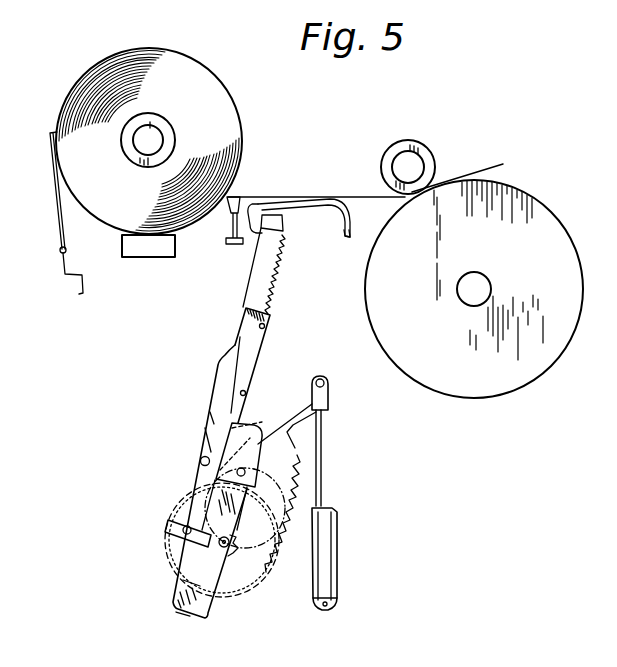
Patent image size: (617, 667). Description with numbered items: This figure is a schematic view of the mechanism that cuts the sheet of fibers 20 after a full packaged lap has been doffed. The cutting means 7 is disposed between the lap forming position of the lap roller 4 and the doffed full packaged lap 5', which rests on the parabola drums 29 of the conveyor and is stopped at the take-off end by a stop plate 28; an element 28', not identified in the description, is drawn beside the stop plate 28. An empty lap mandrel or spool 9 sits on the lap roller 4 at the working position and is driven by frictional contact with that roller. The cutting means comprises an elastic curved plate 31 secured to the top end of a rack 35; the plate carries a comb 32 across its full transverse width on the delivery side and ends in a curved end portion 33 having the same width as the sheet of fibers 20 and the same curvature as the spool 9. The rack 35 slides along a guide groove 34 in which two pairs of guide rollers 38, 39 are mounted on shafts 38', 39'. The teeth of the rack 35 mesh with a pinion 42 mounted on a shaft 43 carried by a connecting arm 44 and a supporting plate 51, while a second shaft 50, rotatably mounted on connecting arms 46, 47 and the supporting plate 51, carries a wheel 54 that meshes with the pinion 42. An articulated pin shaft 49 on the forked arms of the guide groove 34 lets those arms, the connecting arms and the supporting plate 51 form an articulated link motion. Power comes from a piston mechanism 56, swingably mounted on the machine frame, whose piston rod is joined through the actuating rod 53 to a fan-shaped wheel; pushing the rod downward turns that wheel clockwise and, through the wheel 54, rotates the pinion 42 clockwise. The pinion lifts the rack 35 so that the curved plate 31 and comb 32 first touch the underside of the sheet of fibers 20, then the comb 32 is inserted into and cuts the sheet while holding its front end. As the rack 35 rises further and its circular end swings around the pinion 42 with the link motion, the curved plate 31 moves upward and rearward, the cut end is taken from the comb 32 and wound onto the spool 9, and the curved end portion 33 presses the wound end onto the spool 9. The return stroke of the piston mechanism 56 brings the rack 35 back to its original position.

The lap roller 4 is at (485, 386).
The full packaged lap 5' is at (165, 141).
The means for cutting the sheet of fibers 7 is at (207, 418).
The lap mandrel or spool 9 is at (160, 132).
The sheet of fibers 20 is at (503, 164).
The stop plate 28 is at (50, 213).
The post 28' is at (212, 237).
The parabola drums 29 is at (140, 257).
The elastic curved plate 31 is at (290, 205).
The comb 32 is at (256, 202).
The curved end portion 33 is at (352, 220).
The guide groove 34 is at (240, 342).
The rack 35 is at (276, 273).
The guide rollers 38 is at (297, 307).
The shaft 38' is at (300, 333).
The guide rollers 39 is at (276, 370).
The shaft 39' is at (274, 385).
The pinion 42 is at (237, 526).
The shaft 43 is at (245, 470).
The connecting arm 44 is at (325, 425).
The connecting arm 46 is at (196, 575).
The connecting arm 47 is at (200, 461).
The articulated pin shaft 49 is at (182, 530).
The shaft 50 is at (225, 550).
The supporting plate 51 is at (200, 610).
The actuating rod 53 is at (300, 380).
The wheel 54 is at (176, 541).
The piston mechanism 56 is at (335, 553).